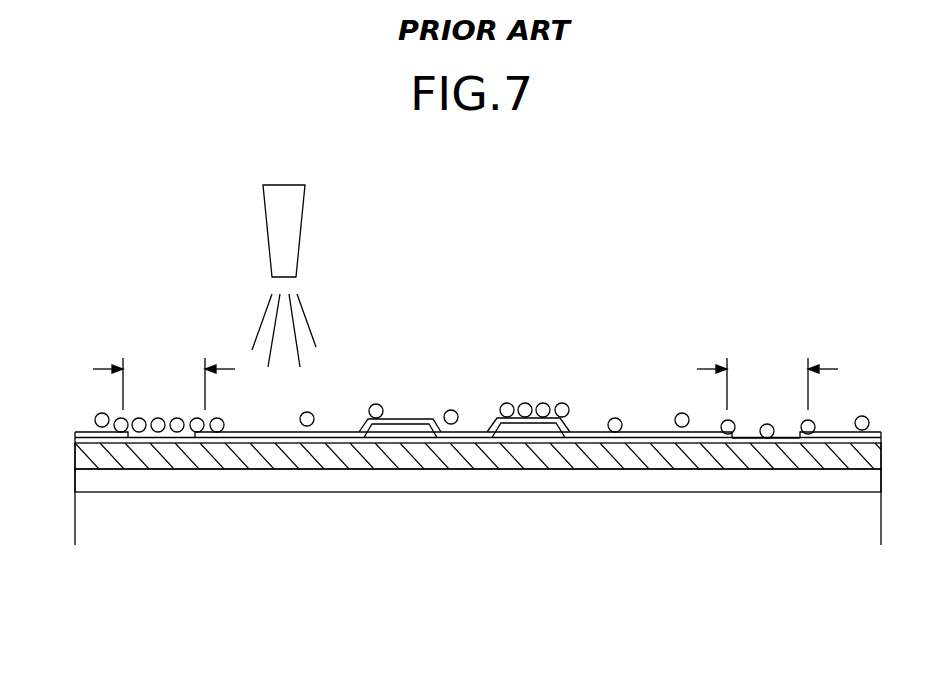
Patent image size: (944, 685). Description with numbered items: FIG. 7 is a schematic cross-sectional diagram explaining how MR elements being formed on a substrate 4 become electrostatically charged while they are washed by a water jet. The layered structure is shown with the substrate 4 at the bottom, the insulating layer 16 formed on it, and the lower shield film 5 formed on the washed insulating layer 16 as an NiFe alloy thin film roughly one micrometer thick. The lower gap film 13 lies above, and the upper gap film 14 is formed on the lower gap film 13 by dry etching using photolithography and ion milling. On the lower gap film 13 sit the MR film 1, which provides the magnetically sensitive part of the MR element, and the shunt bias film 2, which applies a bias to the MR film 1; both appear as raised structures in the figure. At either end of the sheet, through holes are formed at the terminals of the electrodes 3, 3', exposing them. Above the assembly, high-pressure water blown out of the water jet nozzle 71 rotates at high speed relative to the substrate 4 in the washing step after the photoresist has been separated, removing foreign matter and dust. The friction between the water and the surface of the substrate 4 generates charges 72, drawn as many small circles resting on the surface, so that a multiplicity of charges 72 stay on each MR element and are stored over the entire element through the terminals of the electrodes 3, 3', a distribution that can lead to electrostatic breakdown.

The water jet nozzle 71 is at (303, 218).
The charges 72 is at (223, 428).
The MR film 1 is at (393, 440).
The shunt bias film 2 is at (525, 432).
The electrode 3 is at (767, 367).
The electrode 3' is at (164, 367).
The substrate 4 is at (138, 512).
The lower shield film 5 is at (457, 462).
The lower gap film 13 is at (650, 443).
The upper gap film 14 is at (827, 438).
The insulating layer 16 is at (231, 480).